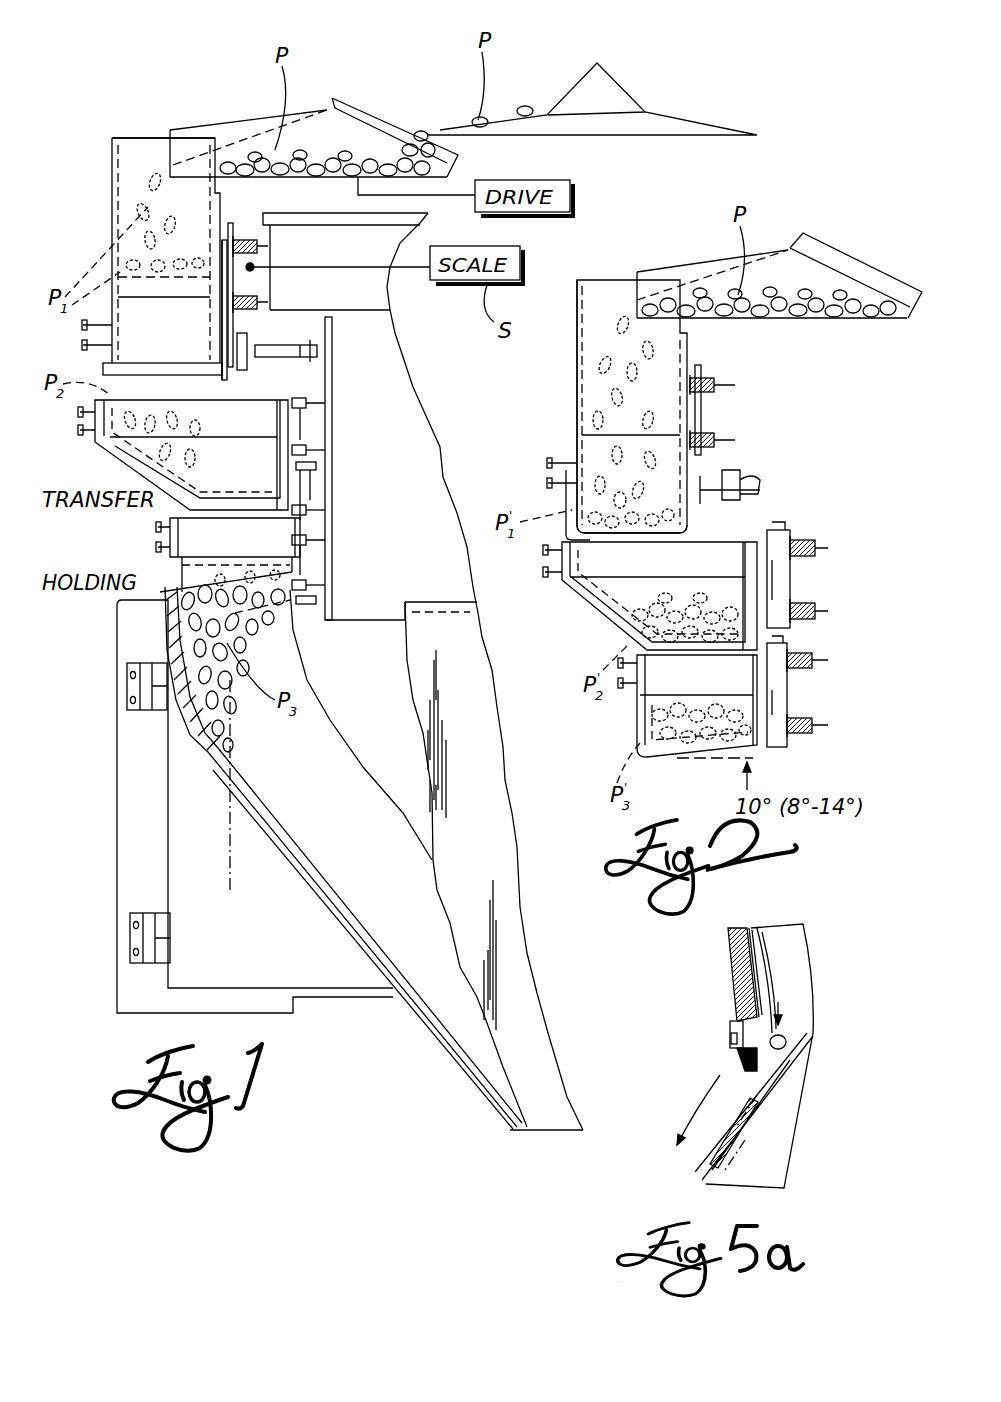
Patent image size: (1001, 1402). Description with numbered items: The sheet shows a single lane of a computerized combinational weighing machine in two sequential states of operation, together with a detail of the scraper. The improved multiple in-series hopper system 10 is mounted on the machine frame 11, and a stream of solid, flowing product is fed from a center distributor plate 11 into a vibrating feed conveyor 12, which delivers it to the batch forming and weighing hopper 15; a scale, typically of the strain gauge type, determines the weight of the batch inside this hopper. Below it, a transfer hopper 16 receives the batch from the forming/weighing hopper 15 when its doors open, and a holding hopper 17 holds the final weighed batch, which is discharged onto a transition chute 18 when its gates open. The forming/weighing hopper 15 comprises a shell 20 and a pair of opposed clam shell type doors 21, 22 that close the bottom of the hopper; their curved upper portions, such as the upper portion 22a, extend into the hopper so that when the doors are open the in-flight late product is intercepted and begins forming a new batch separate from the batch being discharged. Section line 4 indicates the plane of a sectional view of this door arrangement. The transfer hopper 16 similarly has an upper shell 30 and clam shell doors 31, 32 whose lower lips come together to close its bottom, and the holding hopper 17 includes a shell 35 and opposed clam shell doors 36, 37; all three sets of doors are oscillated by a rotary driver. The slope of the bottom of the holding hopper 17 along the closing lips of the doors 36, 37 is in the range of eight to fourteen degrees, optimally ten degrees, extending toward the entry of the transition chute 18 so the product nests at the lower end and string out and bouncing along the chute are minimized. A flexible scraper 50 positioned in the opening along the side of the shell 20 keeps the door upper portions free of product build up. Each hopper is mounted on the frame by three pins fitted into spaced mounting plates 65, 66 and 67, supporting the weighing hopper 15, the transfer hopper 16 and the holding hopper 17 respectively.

In FIG. 1, the multiple in-series hopper system 10 is at (62, 170).
In FIG. 1, the machine frame 11 is at (572, 98).
In FIG. 1, the vibrating feed conveyor 12 is at (335, 118).
In FIG. 2, the vibrating feed conveyor 12 is at (805, 255).
In FIG. 1, the section line 4- 4 is at (240, 322).
In FIG. 1, the batch forming and weighing hopper 15 is at (100, 200).
In FIG. 2, the batch forming and weighing hopper 15 is at (560, 405).
In FIG. 1, the transfer hopper 16 is at (100, 452).
In FIG. 2, the transfer hopper 16 is at (630, 618).
In FIG. 1, the holding hopper 17 is at (150, 532).
In FIG. 2, the holding hopper 17 is at (644, 720).
In FIG. 1, the transition chute 18 is at (263, 827).
In FIG. 2, the shell 20 is at (575, 340).
In FIG. 5A, the shell 20 is at (737, 959).
In FIG. 2, the clam shell door 21 is at (686, 523).
In FIG. 2, the clam shell door 22 is at (695, 528).
In FIG. 5A, the upper portion of door 22a is at (706, 1158).
In FIG. 2, the upper shell 30 is at (727, 563).
In FIG. 2, the clam shell door 31 is at (630, 598).
In FIG. 2, the clam shell door 32 is at (590, 608).
In FIG. 2, the shell 35 is at (745, 690).
In FIG. 2, the clam shell door 36 is at (644, 706).
In FIG. 2, the clam shell door 37 is at (647, 707).
In FIG. 5A, the flexible scraper 50 is at (733, 1054).
In FIG. 2, the mounting plate 65 is at (702, 412).
In FIG. 2, the mounting plate 66 is at (790, 585).
In FIG. 2, the mounting plate 67 is at (790, 713).